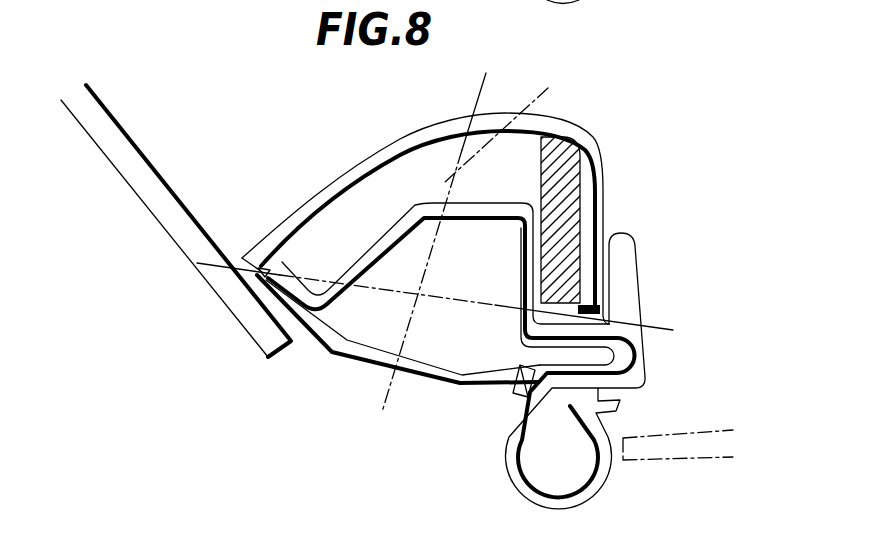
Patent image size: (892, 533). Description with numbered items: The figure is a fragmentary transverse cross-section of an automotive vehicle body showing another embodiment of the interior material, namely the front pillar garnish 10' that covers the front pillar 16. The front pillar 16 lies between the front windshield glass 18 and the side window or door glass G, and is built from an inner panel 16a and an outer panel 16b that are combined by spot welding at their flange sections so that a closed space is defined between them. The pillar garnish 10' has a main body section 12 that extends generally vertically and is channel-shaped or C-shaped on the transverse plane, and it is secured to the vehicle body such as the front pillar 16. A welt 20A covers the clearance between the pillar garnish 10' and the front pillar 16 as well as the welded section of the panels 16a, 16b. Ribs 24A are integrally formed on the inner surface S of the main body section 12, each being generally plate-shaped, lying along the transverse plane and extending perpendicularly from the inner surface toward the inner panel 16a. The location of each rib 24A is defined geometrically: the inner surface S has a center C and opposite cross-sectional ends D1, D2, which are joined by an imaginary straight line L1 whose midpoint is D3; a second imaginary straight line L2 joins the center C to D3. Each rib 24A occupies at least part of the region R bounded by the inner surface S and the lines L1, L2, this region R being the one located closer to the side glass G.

The front windshield glass 18 is at (160, 178).
The main body section 12 is at (380, 148).
The front pillar garnish 10' is at (645, 224).
The rib 24A is at (570, 165).
The region R is at (503, 189).
The inner panel 16a is at (387, 240).
The inner surface S is at (333, 214).
The center C is at (462, 166).
The imaginary straight line L1 is at (360, 288).
The imaginary straight line L2 is at (510, 128).
The front pillar 16 is at (331, 352).
The outer panel 16b is at (382, 362).
The welt 20A is at (633, 288).
The cross-sectional end D1 is at (260, 270).
The cross-sectional end D2 is at (537, 368).
The center D3 is at (423, 290).
The side window or door glass G is at (680, 460).